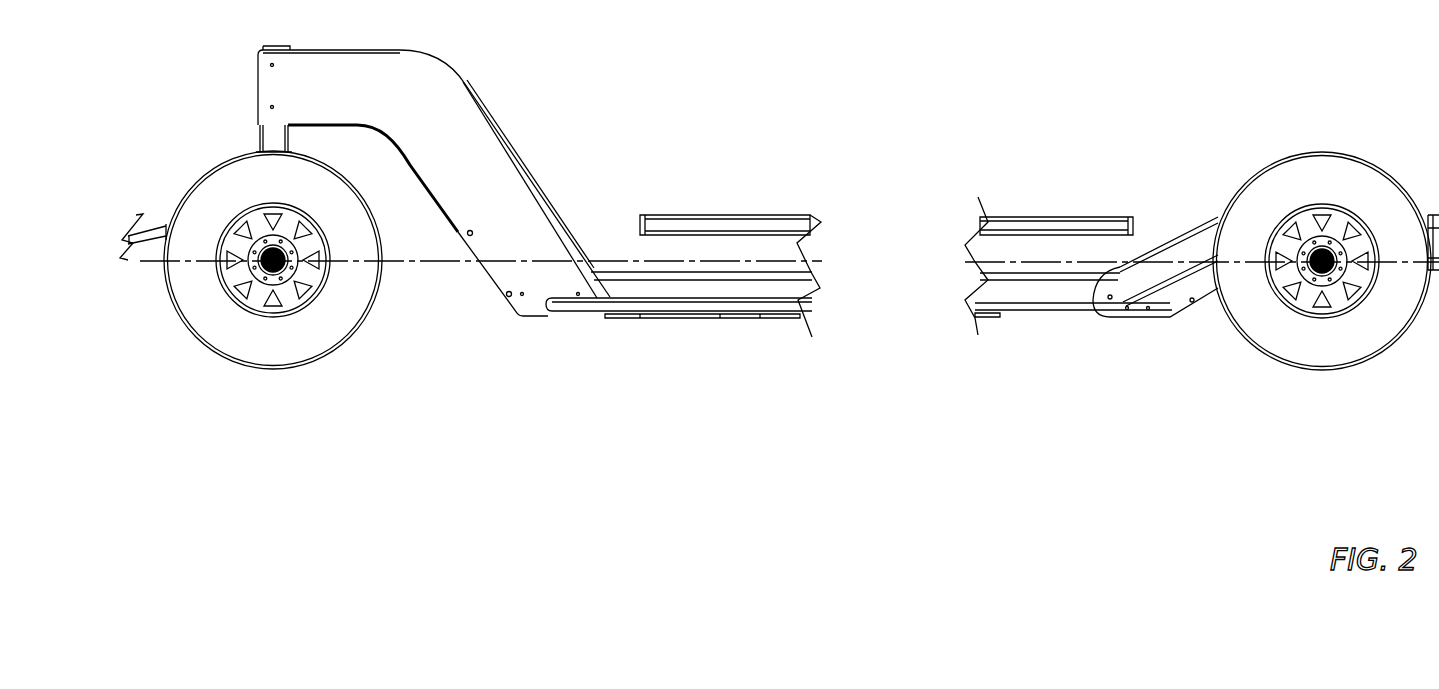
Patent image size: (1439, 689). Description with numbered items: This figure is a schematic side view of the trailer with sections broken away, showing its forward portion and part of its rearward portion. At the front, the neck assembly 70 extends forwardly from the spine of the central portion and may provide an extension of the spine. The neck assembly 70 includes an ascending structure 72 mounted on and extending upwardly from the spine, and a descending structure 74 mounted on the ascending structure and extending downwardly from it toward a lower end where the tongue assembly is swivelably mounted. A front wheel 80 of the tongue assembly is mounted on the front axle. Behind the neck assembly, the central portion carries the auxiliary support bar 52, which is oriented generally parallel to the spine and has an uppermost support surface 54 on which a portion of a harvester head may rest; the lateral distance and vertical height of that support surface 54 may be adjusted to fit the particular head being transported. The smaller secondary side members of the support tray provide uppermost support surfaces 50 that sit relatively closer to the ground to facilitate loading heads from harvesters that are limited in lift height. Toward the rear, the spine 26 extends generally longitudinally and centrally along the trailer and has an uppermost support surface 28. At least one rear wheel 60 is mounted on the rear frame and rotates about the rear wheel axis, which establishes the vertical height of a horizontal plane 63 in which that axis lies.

The neck assembly 70 is at (498, 73).
The ascending structure 72 is at (512, 196).
The descending structure 74 is at (275, 148).
The front wheel 80 is at (213, 318).
The uppermost support surfaces 50 is at (652, 292).
The auxiliary support bar 52 is at (742, 300).
The uppermost support surface 54 is at (765, 215).
The uppermost support surface 28 is at (1067, 272).
The spine 26 is at (1018, 288).
The horizontal plane 63 is at (1178, 262).
The rear wheel 60 is at (1333, 340).